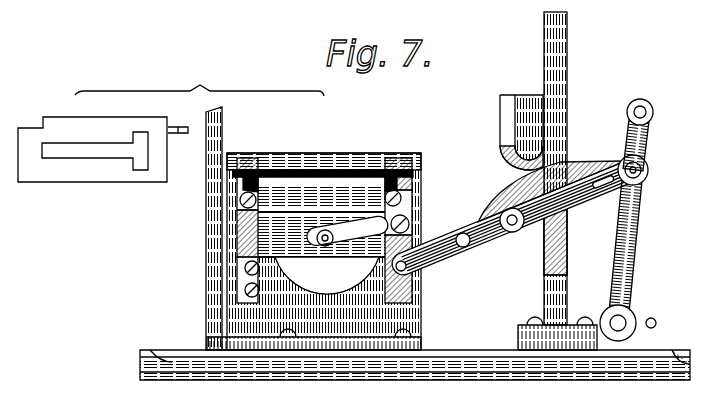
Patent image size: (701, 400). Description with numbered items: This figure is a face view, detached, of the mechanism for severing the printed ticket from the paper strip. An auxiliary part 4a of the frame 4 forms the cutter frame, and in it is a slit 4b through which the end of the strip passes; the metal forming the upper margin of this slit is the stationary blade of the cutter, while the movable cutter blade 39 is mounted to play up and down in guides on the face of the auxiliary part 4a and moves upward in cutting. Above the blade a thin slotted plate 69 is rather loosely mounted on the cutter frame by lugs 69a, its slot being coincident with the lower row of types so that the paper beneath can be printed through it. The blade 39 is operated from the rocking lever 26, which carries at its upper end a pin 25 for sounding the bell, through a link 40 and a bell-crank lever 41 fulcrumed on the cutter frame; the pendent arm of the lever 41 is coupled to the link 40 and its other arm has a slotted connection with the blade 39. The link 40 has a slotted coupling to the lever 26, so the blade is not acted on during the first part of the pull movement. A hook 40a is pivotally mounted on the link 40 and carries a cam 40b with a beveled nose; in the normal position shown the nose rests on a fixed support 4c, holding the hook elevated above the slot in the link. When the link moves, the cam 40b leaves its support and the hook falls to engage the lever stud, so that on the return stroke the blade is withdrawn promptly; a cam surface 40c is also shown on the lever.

The frame 4 is at (364, 362).
The auxiliary part of the frame 4a is at (314, 304).
The slit 4b is at (345, 182).
The fixed support 4c is at (568, 150).
The pin 25 is at (649, 106).
The lever 26 is at (648, 168).
The movable cutter blade 39 is at (360, 247).
The link 40 is at (480, 243).
The hook 40a is at (574, 200).
The cam 40b is at (636, 150).
The cam surface 40c is at (486, 218).
The bell-crank or elbow-lever 41 is at (347, 231).
The slotted plate 69 is at (84, 174).
The lugs 69a is at (432, 162).